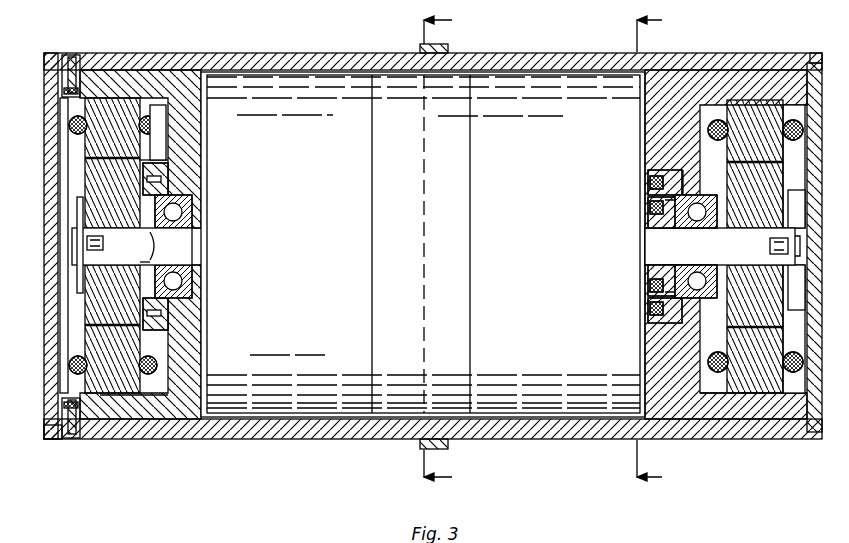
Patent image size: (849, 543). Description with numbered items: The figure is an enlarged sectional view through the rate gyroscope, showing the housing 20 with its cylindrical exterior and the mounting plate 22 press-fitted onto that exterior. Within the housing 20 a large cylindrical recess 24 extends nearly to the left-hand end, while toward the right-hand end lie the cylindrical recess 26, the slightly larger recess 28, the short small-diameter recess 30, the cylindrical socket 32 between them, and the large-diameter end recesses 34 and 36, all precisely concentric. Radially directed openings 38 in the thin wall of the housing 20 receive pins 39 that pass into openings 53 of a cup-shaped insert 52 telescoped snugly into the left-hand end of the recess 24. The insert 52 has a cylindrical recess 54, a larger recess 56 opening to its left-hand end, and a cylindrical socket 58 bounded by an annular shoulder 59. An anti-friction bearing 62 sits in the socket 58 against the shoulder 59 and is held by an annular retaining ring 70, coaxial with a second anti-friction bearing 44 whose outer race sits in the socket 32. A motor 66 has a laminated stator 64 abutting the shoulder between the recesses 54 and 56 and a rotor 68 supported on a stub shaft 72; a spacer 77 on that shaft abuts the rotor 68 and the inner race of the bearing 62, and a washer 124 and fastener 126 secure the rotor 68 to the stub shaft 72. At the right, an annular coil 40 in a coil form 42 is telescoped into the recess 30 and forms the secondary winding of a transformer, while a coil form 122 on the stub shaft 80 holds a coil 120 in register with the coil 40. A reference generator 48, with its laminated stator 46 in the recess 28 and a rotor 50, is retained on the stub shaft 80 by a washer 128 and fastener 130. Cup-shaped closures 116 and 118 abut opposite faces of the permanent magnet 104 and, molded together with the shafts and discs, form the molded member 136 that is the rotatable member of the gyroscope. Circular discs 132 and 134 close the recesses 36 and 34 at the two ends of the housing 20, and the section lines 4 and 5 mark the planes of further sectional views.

The section line 4- 4 is at (667, 253).
The section line 5- 5 is at (449, 253).
The housing 20 is at (745, 62).
The mounting plate 22 is at (450, 48).
The cylindrical recess 24 is at (228, 66).
The cylindrical recess 26 is at (712, 108).
The cylindrical recess 28 is at (796, 400).
The cylindrical recess 30 is at (660, 170).
The cylindrical socket 32 is at (683, 185).
The cylindrical recess 34 is at (815, 60).
The cylindrical recess 36 is at (50, 55).
The radially-directed openings 38 is at (72, 56).
The pins 39 is at (74, 62).
The annular coil 40 is at (650, 190).
The annular coil form 42 is at (650, 180).
The anti-friction bearing 44 is at (722, 246).
The stator 46 is at (768, 100).
The reference generator 48 is at (796, 168).
The rotor 50 is at (778, 330).
The cup-shaped insert 52 is at (190, 405).
The radially-directed openings 53 is at (104, 72).
The cylindrical recess 54 is at (155, 400).
The cylindrical recess 56 is at (68, 392).
The cylindrical socket 58 is at (176, 188).
The annular shoulder 59 is at (192, 200).
The anti-friction bearing 62 is at (161, 245).
The stator 64 is at (130, 400).
The motor 66 is at (76, 330).
The rotor 68 is at (96, 172).
The annular retaining ring 70 is at (160, 152).
The stub shaft 72 is at (200, 250).
The spacer 77 is at (155, 256).
The stub shaft 80 is at (654, 240).
The permanent magnet 104 is at (385, 110).
The cup-shaped closure 116 is at (290, 85).
The cup-shaped closure 118 is at (585, 95).
The annular coil 120 is at (650, 206).
The coil form 122 is at (652, 222).
The washer 124 is at (102, 245).
The fastener 126 is at (111, 240).
The washer 128 is at (792, 208).
The fastener 130 is at (797, 242).
The circular disc 132 is at (50, 430).
The circular disc 134 is at (818, 88).
The molded member 136 is at (496, 246).